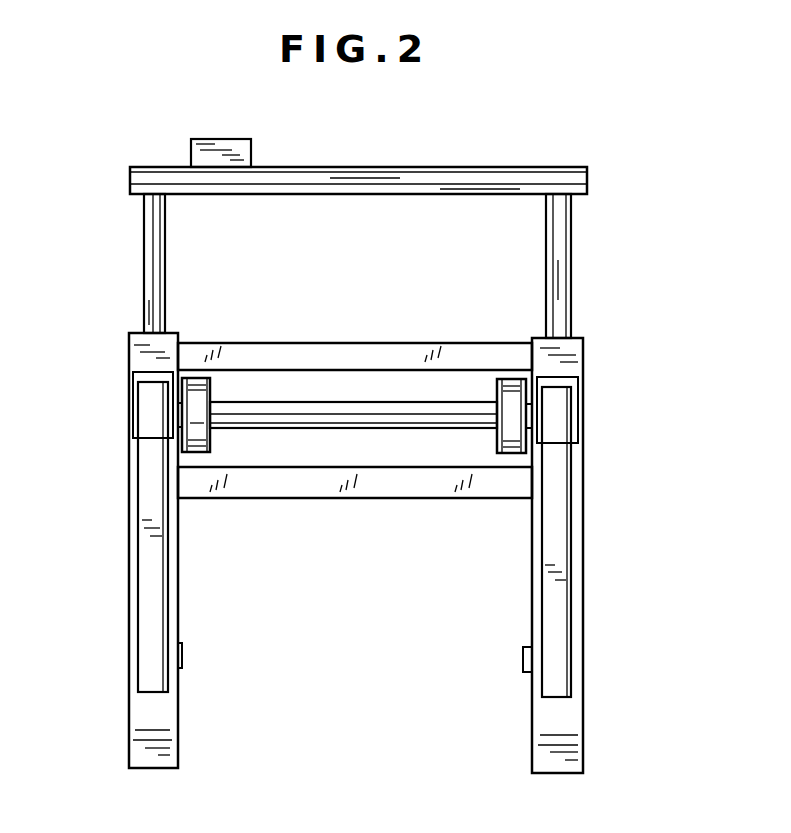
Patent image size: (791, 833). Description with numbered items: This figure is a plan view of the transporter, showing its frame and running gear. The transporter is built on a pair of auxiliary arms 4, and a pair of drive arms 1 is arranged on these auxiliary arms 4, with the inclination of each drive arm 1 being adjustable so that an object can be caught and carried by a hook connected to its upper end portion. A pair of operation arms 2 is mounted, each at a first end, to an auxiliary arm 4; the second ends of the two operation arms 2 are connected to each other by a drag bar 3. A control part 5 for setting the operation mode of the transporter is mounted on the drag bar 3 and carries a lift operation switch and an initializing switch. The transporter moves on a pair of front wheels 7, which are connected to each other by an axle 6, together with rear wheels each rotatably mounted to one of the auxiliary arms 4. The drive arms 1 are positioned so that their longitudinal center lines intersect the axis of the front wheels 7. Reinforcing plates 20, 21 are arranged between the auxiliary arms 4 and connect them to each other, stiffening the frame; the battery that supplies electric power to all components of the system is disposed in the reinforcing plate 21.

The drive arm 1 is at (150, 582).
The operation arm 2 is at (153, 247).
The drag bar 3 is at (587, 183).
The auxiliary arm 4 is at (142, 714).
The control part 5 is at (251, 157).
The axle 6 is at (490, 418).
The front wheel 7 is at (190, 412).
The reinforcing plate 20 is at (518, 490).
The reinforcing plate 21 is at (500, 352).